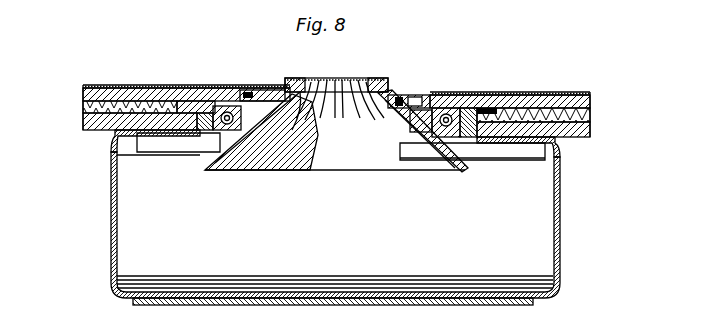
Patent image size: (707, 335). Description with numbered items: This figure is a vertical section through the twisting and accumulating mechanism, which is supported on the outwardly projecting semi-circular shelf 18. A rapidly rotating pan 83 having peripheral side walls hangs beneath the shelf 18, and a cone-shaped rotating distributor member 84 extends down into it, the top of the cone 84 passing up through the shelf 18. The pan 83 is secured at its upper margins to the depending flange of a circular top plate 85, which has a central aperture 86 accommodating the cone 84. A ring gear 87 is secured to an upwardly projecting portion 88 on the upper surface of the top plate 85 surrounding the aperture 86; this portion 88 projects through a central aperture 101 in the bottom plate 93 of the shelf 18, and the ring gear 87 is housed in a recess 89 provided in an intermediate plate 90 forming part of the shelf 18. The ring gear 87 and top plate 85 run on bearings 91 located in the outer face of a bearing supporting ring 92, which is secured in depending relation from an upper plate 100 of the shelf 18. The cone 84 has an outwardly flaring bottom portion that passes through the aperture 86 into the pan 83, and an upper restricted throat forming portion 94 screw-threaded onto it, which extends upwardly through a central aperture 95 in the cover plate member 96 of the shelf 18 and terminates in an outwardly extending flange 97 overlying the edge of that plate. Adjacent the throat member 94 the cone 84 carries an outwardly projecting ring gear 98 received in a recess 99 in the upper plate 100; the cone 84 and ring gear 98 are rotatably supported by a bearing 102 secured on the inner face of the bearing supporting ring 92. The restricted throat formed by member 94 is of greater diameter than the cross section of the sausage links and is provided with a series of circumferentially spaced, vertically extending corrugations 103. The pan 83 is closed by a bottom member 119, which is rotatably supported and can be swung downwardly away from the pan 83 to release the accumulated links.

The semi-circular shelf 18 is at (173, 86).
The pan 83 is at (542, 237).
The cone-shaped rotating distributor member 84 is at (362, 145).
The circular top plate 85 is at (170, 132).
The central aperture 86 is at (235, 171).
The ring gear 87 is at (190, 100).
The upwardly projecting portion 88 is at (193, 130).
The recess 89 is at (560, 93).
The intermediate plate 90 is at (588, 112).
The bearings 91 is at (433, 155).
The bearing supporting ring 92 is at (222, 165).
The bottom plate 93 is at (83, 122).
The throat forming portion 94 is at (358, 80).
The central aperture 95 is at (308, 78).
The cover plate member 96 is at (104, 84).
The outwardly extending flange 97 is at (400, 90).
The ring gear 98 is at (415, 92).
The recess 99 is at (250, 88).
The upper plate 100 is at (83, 97).
The central aperture 101 is at (497, 143).
The bearing 102 is at (283, 124).
The corrugations 103 is at (326, 84).
The bottom member 119 is at (221, 308).